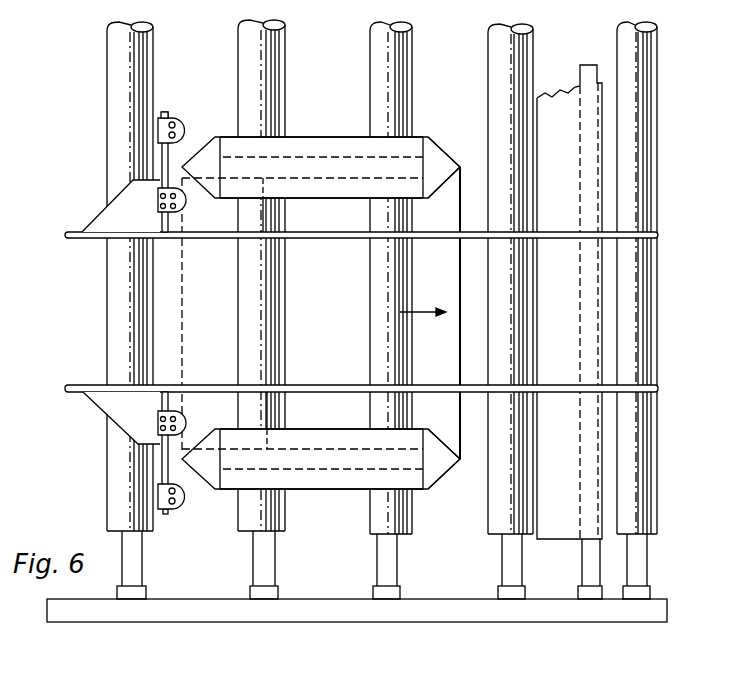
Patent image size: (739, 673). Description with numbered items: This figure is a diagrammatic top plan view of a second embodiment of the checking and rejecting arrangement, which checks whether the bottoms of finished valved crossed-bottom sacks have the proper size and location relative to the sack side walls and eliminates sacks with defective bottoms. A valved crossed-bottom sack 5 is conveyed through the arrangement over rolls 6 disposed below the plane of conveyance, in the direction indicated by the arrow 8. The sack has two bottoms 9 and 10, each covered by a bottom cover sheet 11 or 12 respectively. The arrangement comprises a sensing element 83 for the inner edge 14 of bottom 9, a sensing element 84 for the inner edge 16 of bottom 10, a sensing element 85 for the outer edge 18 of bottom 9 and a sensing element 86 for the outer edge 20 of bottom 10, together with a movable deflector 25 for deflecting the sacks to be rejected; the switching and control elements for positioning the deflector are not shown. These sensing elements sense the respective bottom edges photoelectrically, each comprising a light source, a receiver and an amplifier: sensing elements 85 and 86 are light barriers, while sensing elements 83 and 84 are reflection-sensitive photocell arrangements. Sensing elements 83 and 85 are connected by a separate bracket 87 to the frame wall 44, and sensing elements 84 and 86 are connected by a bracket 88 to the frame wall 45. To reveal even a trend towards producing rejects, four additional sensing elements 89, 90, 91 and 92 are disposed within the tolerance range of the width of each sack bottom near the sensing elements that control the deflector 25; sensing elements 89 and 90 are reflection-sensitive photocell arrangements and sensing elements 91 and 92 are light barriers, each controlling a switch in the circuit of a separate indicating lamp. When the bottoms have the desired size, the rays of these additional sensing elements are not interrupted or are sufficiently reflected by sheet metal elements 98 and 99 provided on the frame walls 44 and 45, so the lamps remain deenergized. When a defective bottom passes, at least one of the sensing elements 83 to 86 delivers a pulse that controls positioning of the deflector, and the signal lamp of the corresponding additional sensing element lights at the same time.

The valved crossed-bottom sack 5 is at (344, 315).
The rolls 6 is at (248, 53).
The arrow 8 is at (412, 316).
The bottom 9 is at (438, 162).
The bottom 10 is at (437, 458).
The bottom cover sheet 11 is at (290, 148).
The bottom cover sheet 12 is at (320, 479).
The inner edge of bottom 9 14 is at (317, 200).
The inner edge of bottom 10 16 is at (297, 428).
The outer edge of bottom 9 18 is at (328, 136).
The outer edge of bottom 10 20 is at (343, 490).
The movable deflector 25 is at (556, 110).
The frame wall 44 is at (395, 237).
The frame wall 45 is at (423, 387).
The sensing element 83 is at (162, 212).
The sensing element 84 is at (160, 420).
The sensing element 85 is at (172, 125).
The sensing element 86 is at (170, 501).
The bracket 87 is at (163, 160).
The bracket 88 is at (160, 456).
The additional sensing element 89 is at (160, 199).
The additional sensing element 90 is at (160, 433).
The additional sensing element 91 is at (170, 135).
The additional sensing element 92 is at (170, 490).
The sheet metal element 98 is at (235, 217).
The sheet metal element 99 is at (212, 411).